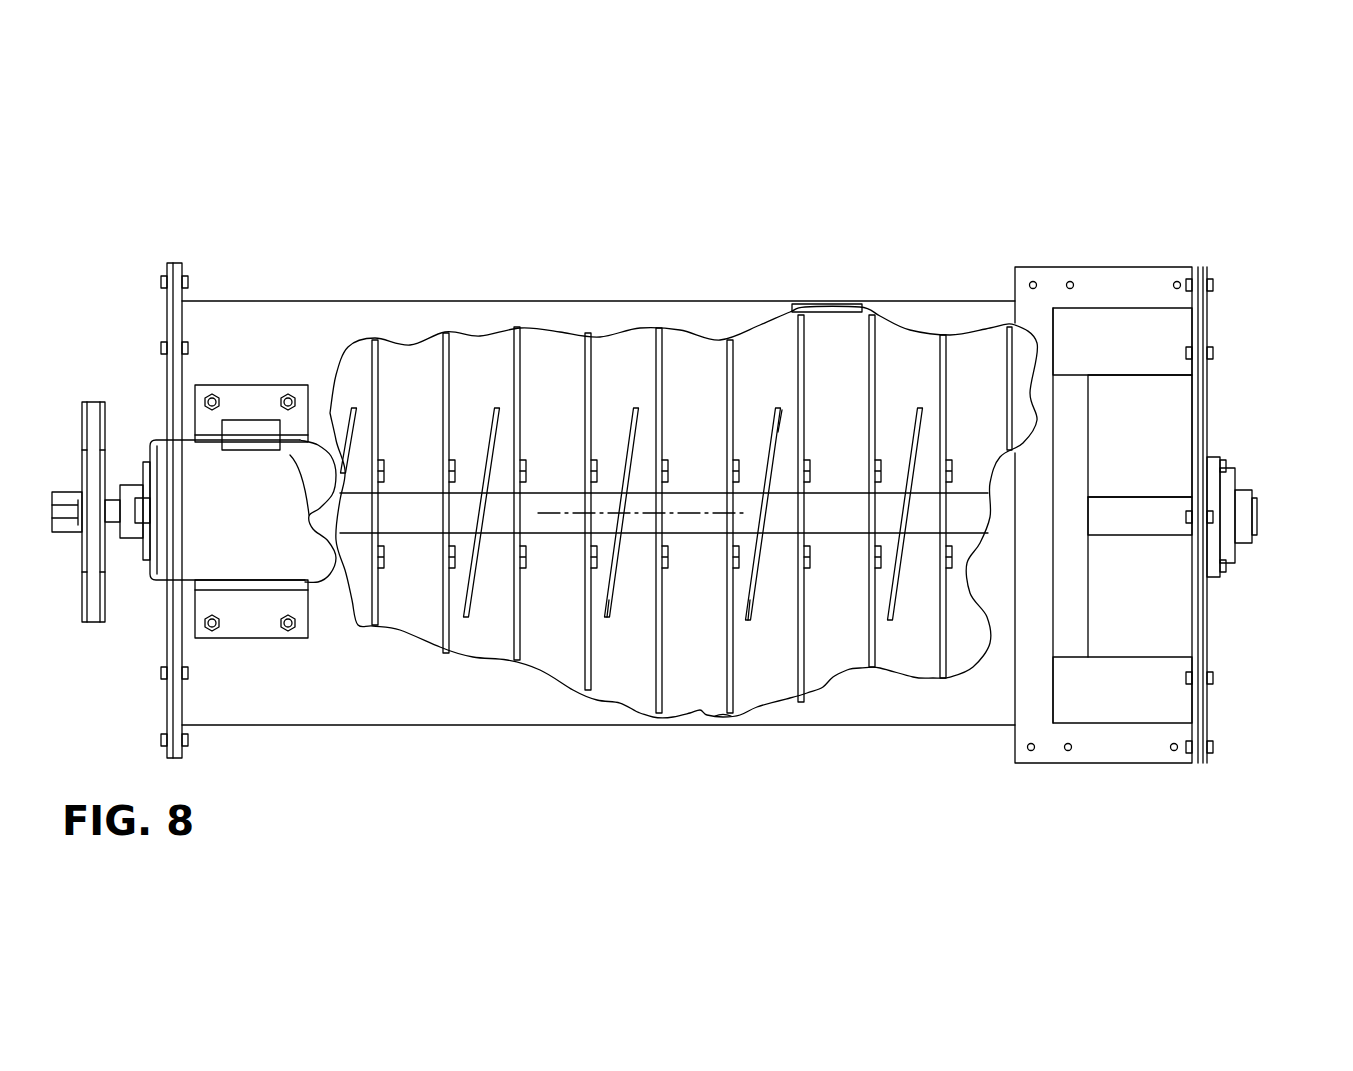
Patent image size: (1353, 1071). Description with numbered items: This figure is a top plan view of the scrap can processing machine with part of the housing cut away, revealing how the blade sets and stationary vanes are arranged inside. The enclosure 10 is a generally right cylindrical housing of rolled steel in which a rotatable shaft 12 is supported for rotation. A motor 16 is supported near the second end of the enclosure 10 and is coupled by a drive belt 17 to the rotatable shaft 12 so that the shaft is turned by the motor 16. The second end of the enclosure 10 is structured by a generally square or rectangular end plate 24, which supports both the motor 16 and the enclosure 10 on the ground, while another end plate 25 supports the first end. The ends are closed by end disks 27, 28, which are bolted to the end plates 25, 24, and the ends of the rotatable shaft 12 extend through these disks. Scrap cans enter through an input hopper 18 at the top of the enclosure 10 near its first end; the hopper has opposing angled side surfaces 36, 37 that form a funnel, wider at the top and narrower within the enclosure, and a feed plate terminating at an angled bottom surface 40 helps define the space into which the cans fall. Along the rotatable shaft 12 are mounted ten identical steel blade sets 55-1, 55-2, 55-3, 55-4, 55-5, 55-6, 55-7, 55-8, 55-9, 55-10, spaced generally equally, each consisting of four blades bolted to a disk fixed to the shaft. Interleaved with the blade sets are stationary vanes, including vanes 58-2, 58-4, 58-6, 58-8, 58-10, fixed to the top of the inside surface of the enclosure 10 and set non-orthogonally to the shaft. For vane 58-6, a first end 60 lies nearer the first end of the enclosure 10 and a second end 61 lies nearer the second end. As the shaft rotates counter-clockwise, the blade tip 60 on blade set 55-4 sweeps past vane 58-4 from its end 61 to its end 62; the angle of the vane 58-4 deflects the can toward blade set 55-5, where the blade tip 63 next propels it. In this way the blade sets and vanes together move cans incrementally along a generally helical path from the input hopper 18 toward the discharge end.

The enclosure 10 is at (695, 518).
The rotatable shaft 12 is at (1262, 515).
The motor 16 is at (245, 533).
The drive belt 17 is at (91, 402).
The input hopper 18 is at (1113, 306).
The end plate 24 is at (182, 698).
The end plate 25 is at (1190, 625).
The end disk 27 is at (1205, 727).
The end disk 28 is at (165, 717).
The angled side surface 36 is at (1185, 325).
The angled side surface 37 is at (1180, 703).
The angled bottom surface 40 is at (1075, 410).
The blade set 55-1 is at (993, 348).
The blade set 55-2 is at (923, 348).
The blade set 55-3 is at (850, 348).
The blade set 55-4 is at (780, 348).
The blade set 55-5 is at (707, 348).
The blade set 55-6 is at (645, 350).
The blade set 55-7 is at (571, 350).
The blade set 55-8 is at (503, 350).
The blade set 55-9 is at (428, 350).
The blade set 55-10 is at (353, 348).
The stationary vane 58-2 is at (893, 620).
The stationary vane 58-4 is at (760, 590).
The stationary vane 58-6 is at (608, 617).
The stationary vane 58-8 is at (473, 592).
The stationary vane 58-10 is at (346, 409).
The first end 60 is at (818, 330).
The second end 61 is at (782, 425).
The end of vane 62 is at (747, 606).
The blade tip 63 is at (730, 709).